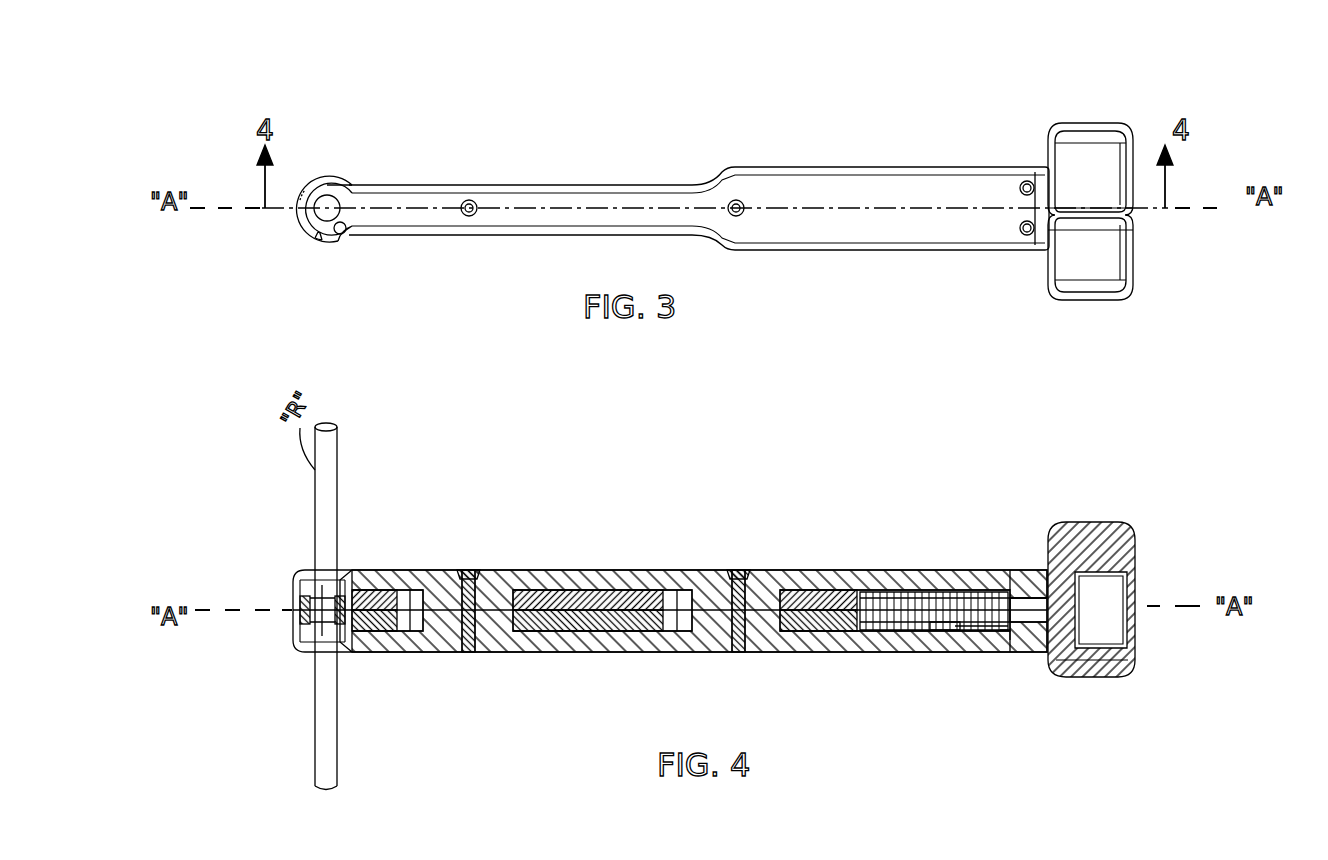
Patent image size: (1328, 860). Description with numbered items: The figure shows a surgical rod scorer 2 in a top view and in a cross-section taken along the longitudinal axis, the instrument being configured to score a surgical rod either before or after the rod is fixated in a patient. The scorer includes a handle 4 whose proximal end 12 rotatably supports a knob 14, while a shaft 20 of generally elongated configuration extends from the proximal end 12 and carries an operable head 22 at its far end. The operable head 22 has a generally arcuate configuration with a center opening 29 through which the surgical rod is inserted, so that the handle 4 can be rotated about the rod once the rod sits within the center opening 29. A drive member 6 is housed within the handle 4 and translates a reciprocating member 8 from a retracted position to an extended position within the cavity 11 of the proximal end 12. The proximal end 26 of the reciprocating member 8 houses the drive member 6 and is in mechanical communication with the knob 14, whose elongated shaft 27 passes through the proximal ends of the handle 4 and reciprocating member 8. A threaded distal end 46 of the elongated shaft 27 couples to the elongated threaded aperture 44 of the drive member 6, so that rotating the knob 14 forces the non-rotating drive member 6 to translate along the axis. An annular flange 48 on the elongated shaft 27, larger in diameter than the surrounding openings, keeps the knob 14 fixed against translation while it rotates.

In FIG. 3, the surgical rod scorer 2 is at (1090, 68).
In FIG. 4, the surgical rod scorer 2 is at (1074, 477).
In FIG. 3, the handle 4 is at (787, 162).
In FIG. 4, the handle 4 is at (626, 568).
In FIG. 4, the drive member 6 is at (925, 593).
In FIG. 4, the reciprocating member 8 is at (597, 633).
In FIG. 4, the cavity 11 is at (960, 633).
In FIG. 3, the proximal end 12 is at (965, 166).
In FIG. 4, the proximal end 12 is at (1035, 652).
In FIG. 3, the knob 14 is at (1133, 272).
In FIG. 4, the knob 14 is at (1091, 599).
In FIG. 3, the shaft 20 is at (548, 185).
In FIG. 3, the operable head 22 is at (345, 180).
In FIG. 4, the operable head 22 is at (295, 572).
In FIG. 4, the proximal end of reciprocating member 26 is at (945, 632).
In FIG. 4, the elongated shaft 27 is at (970, 600).
In FIG. 3, the center opening 29 is at (327, 195).
In FIG. 4, the elongated threaded aperture 44 is at (868, 633).
In FIG. 4, the threaded distal end 46 is at (880, 591).
In FIG. 4, the annular flange 48 is at (1005, 632).